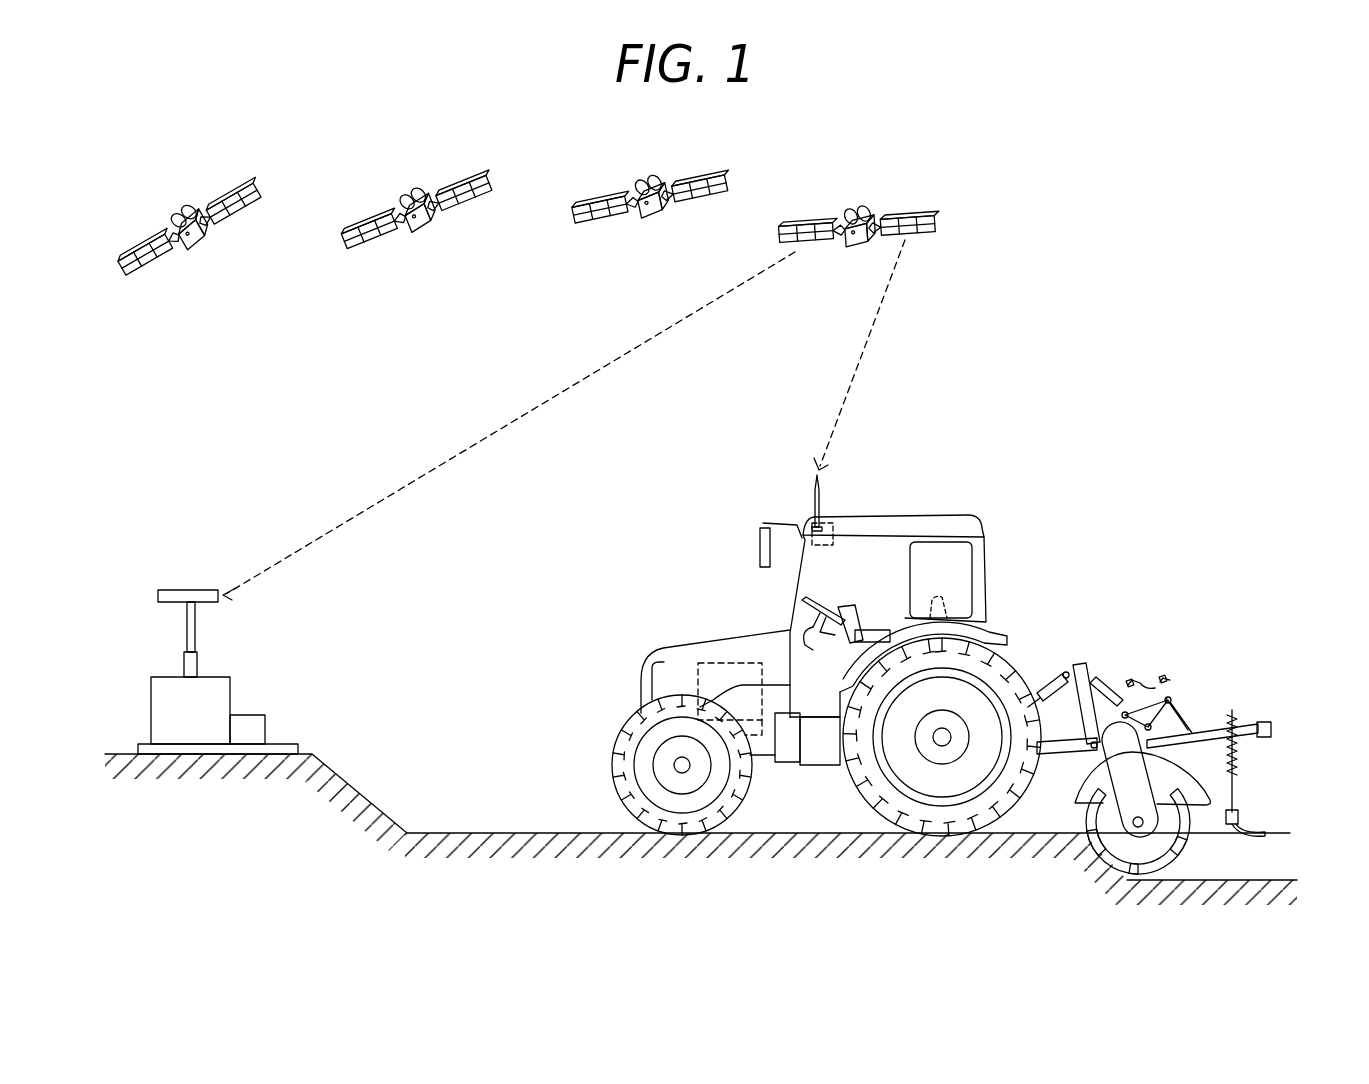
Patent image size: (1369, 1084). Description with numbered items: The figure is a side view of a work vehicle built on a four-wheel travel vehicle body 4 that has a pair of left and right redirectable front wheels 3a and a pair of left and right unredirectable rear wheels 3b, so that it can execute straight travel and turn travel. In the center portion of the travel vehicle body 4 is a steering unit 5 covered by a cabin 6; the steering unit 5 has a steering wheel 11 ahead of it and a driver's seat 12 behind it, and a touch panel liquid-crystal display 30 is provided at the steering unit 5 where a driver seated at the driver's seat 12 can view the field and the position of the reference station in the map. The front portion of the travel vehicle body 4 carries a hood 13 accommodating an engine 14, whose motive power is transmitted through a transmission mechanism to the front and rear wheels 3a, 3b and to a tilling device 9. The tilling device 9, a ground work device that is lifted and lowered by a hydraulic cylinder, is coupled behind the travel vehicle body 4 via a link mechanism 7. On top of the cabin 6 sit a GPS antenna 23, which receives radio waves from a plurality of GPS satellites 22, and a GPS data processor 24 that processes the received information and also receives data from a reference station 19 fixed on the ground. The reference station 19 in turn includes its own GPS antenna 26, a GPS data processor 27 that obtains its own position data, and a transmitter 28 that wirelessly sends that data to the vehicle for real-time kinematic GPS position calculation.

The front wheels 3a is at (677, 837).
The rear wheels 3b is at (952, 823).
The travel vehicle body 4 is at (788, 773).
The steering unit 5 is at (853, 597).
The cabin 6 is at (963, 527).
The link mechanism 7 is at (1149, 768).
The tilling device 9 is at (1137, 870).
The steering wheel 11 is at (797, 685).
The driver's seat 12 is at (940, 610).
The hood 13 is at (672, 643).
The engine 14 is at (722, 662).
The reference station 19 is at (229, 594).
The GPS satellites 22 is at (180, 217).
The GPS antenna 23 is at (808, 462).
The GPS data processor 24 is at (833, 523).
The GPS antenna 26 is at (157, 596).
The GPS data processor 27 is at (160, 698).
The transmitter 28 is at (260, 723).
The touch panel liquid-crystal display 30 is at (870, 630).